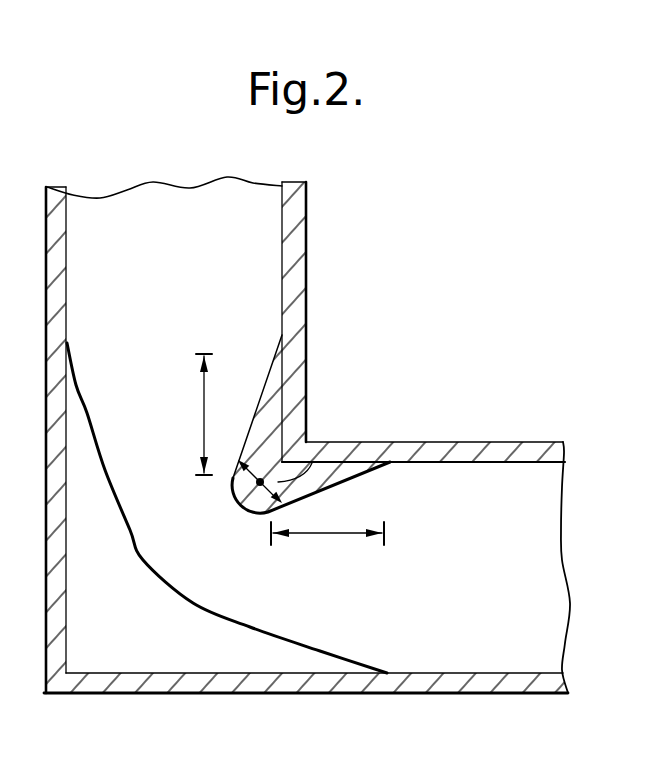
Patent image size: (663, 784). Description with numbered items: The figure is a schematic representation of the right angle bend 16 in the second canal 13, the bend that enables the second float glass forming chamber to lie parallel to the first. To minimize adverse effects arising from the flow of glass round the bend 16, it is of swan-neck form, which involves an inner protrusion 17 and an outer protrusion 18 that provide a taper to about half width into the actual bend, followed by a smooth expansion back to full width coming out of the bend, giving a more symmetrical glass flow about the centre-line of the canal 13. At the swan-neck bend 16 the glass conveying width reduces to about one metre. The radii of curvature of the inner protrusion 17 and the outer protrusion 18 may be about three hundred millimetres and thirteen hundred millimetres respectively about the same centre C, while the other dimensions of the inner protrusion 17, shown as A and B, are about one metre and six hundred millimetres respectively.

The second canal 13 is at (307, 268).
The right angle bend 16 is at (117, 705).
The inner protrusion 17 is at (263, 390).
The outer protrusion 18 is at (87, 412).
The dimension of inner protrusion A is at (280, 462).
The dimension of inner protrusion B is at (257, 484).
The centre of curvature C is at (312, 463).